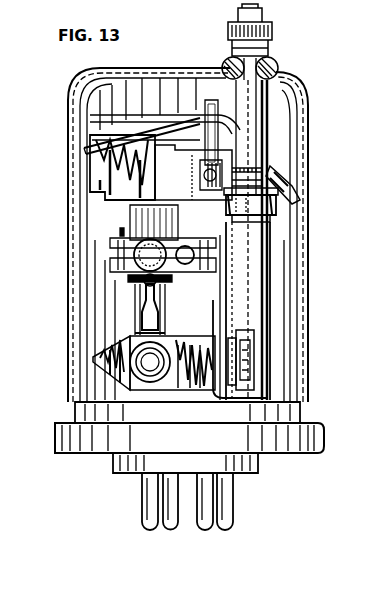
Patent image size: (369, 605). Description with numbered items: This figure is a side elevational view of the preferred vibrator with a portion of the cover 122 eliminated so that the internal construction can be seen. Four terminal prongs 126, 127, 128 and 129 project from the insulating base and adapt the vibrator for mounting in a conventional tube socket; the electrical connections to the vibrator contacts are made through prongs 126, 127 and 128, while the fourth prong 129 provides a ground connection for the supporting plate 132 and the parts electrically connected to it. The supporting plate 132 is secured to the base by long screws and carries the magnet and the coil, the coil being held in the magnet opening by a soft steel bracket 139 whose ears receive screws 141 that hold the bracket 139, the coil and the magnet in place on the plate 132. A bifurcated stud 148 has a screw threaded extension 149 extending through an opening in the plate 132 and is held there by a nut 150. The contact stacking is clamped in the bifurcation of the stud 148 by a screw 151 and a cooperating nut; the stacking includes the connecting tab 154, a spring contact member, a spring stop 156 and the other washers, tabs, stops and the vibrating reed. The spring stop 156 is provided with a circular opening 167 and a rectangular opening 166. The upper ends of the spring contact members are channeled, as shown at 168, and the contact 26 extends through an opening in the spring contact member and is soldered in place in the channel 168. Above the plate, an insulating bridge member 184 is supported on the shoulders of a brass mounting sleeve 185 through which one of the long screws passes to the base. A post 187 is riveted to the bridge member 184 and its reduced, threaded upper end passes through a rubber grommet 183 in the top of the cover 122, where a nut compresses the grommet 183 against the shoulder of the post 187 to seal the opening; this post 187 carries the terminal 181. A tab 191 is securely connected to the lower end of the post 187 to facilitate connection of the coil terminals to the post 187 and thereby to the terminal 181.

The cover 122 is at (70, 216).
The terminal 181 is at (263, 20).
The rubber grommet 183 is at (274, 70).
The post 187 is at (266, 113).
The supporting plate 132 is at (207, 103).
The bracket 139 is at (94, 167).
The screws 141 is at (174, 168).
The circular opening 167 is at (162, 282).
The contact 26 is at (132, 305).
The channel 168 is at (136, 322).
The rectangular opening 166 is at (160, 312).
The spring stop 156 is at (134, 336).
The bifurcated stud 148 is at (197, 378).
The screw 151 is at (152, 380).
The connecting tab 154 is at (97, 358).
The tab 191 is at (290, 196).
The bridge member 184 is at (268, 226).
The mounting sleeve 185 is at (270, 309).
The nut 150 is at (256, 332).
The screw threaded extension 149 is at (256, 351).
The terminal prong 127 is at (142, 498).
The terminal prong 128 is at (165, 528).
The terminal prong 129 is at (233, 498).
The terminal prong 126 is at (208, 528).